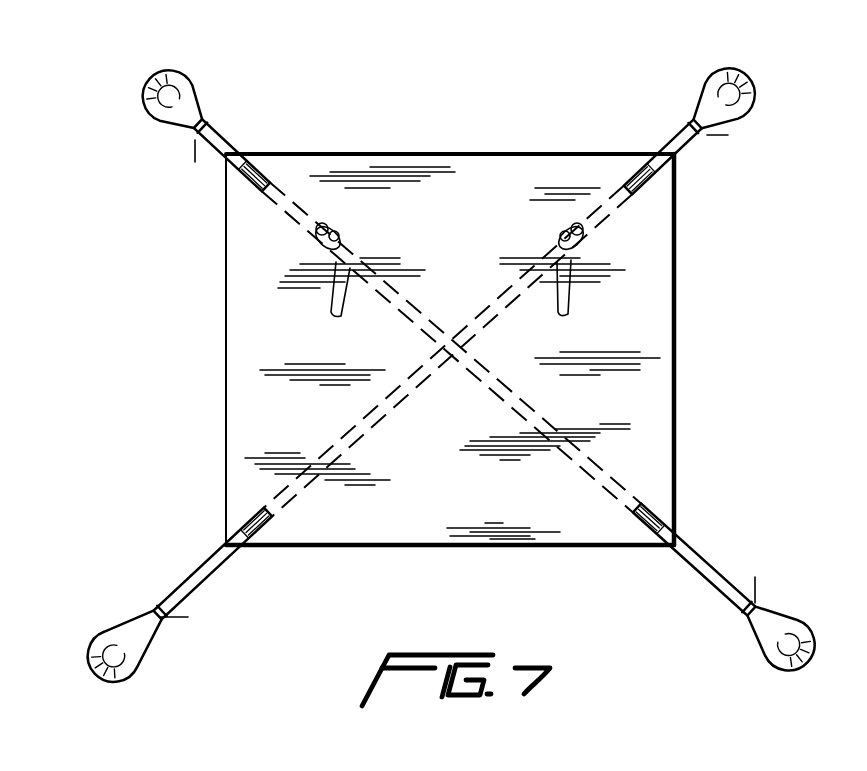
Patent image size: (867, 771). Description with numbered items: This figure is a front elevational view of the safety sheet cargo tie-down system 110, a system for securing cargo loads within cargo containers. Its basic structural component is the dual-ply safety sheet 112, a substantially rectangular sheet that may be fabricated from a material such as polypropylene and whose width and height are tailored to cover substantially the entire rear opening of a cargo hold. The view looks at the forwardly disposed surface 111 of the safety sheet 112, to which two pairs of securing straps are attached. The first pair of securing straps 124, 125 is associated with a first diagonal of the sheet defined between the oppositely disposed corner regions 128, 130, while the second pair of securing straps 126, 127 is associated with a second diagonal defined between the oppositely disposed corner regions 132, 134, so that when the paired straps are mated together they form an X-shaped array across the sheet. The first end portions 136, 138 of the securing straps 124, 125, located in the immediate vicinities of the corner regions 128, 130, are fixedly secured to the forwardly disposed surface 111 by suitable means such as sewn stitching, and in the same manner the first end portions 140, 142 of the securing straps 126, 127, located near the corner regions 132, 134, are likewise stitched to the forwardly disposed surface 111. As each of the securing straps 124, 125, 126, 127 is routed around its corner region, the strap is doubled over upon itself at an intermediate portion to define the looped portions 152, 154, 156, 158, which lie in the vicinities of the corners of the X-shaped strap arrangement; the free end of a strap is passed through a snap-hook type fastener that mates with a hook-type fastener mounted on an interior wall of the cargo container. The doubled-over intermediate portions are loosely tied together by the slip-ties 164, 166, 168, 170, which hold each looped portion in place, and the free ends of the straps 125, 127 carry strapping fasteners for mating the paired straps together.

The safety sheet cargo tie-down system 110 is at (745, 268).
The forwardly disposed surface 111 is at (461, 226).
The dual-ply safety sheet component 112 is at (640, 368).
The securing strap 124 is at (224, 604).
The securing strap 125 is at (666, 152).
The securing strap 126 is at (708, 573).
The securing strap 127 is at (240, 130).
The corner region 128 is at (277, 551).
The corner region 130 is at (677, 168).
The corner region 132 is at (708, 512).
The corner region 134 is at (194, 155).
The first end portion 136 is at (270, 525).
The first end portion 138 is at (706, 119).
The first end portion 140 is at (657, 513).
The first end portion 142 is at (270, 172).
The looped portion 152 is at (107, 683).
The looped portion 154 is at (752, 86).
The looped portion 156 is at (788, 674).
The looped portion 158 is at (150, 96).
The slip-tie 164 is at (173, 617).
The slip-tie 166 is at (728, 136).
The slip-tie 168 is at (758, 590).
The slip-tie 170 is at (195, 157).